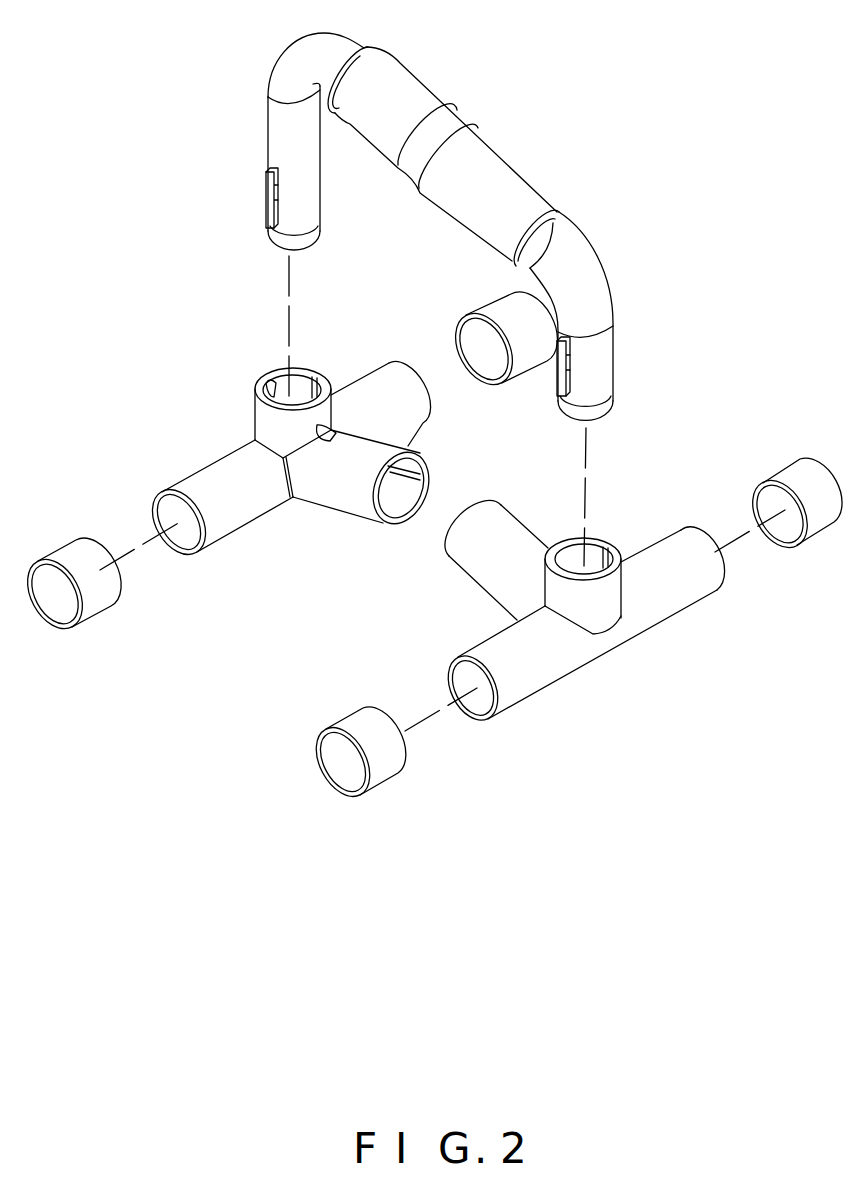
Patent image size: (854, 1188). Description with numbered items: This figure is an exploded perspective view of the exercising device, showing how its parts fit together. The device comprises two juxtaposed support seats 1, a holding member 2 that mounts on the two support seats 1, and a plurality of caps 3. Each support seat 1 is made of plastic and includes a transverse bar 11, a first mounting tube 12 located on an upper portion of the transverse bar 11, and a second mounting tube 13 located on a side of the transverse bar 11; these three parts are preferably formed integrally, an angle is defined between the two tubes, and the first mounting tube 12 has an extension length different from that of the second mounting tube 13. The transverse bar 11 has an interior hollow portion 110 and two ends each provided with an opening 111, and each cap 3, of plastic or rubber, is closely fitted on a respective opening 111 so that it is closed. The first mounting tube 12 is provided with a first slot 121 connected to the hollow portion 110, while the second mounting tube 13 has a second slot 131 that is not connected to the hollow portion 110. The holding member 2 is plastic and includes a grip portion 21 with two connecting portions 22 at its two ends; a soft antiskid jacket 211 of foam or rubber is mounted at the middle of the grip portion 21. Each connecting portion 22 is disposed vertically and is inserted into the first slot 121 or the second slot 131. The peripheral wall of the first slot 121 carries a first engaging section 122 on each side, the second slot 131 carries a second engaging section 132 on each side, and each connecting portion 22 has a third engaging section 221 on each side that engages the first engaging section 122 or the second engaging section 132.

The support seat 1 is at (151, 481).
The transverse bar 11 is at (212, 468).
The hollow portion 110 is at (178, 547).
The opening 111 is at (178, 522).
The first mounting tube 12 is at (275, 380).
The first slot 121 is at (287, 383).
The first engaging section 122 is at (262, 388).
The second mounting tube 13 is at (343, 503).
The second slot 131 is at (397, 503).
The second engaging section 132 is at (412, 467).
The holding member 2 is at (236, 105).
The grip portion 21 is at (558, 222).
The soft antiskid jacket 211 is at (425, 100).
The connecting portion 22 is at (268, 140).
The third engaging section 221 is at (268, 205).
The cap 3 is at (456, 300).